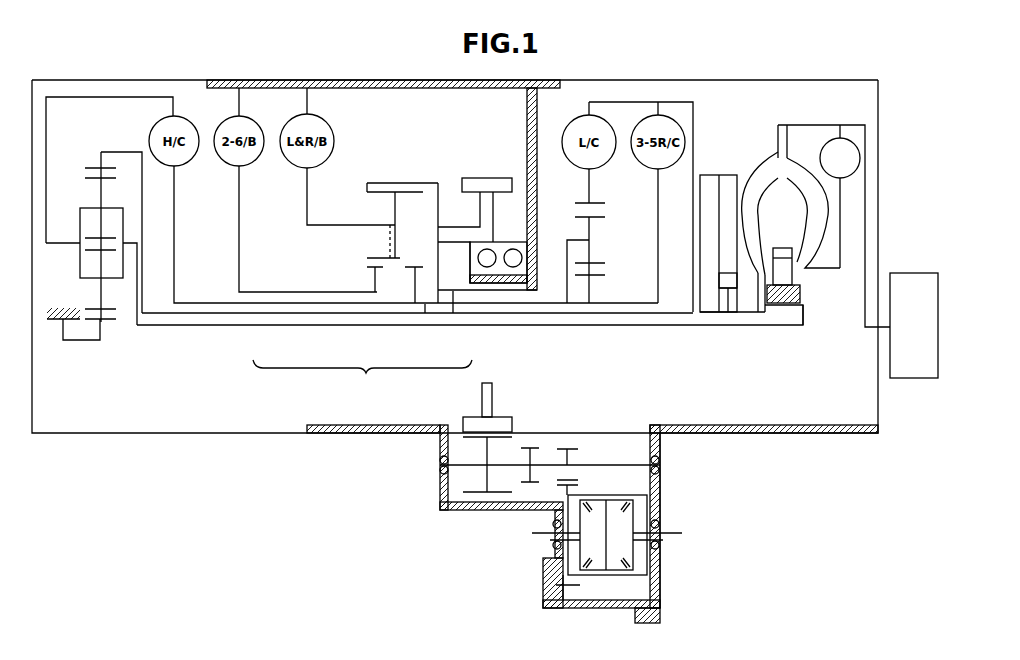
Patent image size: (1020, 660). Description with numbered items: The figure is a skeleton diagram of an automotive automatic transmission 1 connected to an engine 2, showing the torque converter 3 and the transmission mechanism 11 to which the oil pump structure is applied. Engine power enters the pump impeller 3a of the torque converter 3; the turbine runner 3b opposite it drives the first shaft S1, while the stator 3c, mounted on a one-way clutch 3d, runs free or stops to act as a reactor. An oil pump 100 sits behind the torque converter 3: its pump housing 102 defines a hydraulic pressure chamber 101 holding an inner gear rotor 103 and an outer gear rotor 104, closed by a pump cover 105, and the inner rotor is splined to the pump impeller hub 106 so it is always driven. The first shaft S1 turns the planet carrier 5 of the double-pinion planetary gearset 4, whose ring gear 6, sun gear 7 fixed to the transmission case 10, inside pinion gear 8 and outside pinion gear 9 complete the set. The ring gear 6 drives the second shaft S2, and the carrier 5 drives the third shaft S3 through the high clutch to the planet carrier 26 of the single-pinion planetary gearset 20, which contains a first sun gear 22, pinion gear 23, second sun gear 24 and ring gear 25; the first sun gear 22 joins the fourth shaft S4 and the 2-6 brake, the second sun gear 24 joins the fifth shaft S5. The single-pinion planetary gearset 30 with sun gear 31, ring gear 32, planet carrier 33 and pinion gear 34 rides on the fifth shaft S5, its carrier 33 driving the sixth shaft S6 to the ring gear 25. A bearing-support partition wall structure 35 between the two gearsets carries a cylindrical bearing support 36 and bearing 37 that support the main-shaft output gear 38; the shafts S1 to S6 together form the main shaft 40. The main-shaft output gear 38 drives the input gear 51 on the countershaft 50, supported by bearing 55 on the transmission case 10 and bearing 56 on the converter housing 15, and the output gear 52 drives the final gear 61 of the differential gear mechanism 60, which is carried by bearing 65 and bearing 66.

The automatic transmission 1 is at (878, 112).
The engine 2 is at (914, 273).
The torque converter 3 is at (808, 120).
The pump impeller 3a is at (757, 183).
The turbine runner 3b is at (805, 175).
The stator 3c is at (782, 247).
The one-way clutch 3d is at (792, 272).
The double-pinion planetary gearset 4 is at (101, 148).
The planet carrier 5 is at (80, 262).
The ring gear 6 is at (85, 166).
The sun gear 7 is at (107, 325).
The inside pinion gear 8 is at (101, 303).
The outside pinion gear 9 is at (101, 192).
The transmission case 10 is at (470, 90).
The transmission mechanism 11 is at (652, 78).
The converter housing 15 is at (661, 578).
The single-pinion planetary gearset 20 is at (415, 176).
The first sun gear 22 is at (367, 262).
The pinion gear 23 is at (395, 208).
The second sun gear 24 is at (428, 270).
The ring gear 25 is at (395, 182).
The planet carrier 26 is at (307, 232).
The single-pinion planetary gearset 30 is at (600, 202).
The sun gear 31 is at (590, 287).
The ring gear 32 is at (589, 190).
The planet carrier 33 is at (585, 238).
The pinion gear 34 is at (590, 260).
The bearing-support partition wall structure 35 is at (541, 112).
The cylindrical bearing support 36 is at (527, 291).
The bearing 37 is at (487, 262).
The main-shaft output gear 38 is at (492, 178).
The main shaft 40 is at (362, 375).
The countershaft 50 is at (588, 463).
The input gear 51 is at (470, 490).
The output gear 52 is at (565, 445).
The bearing 55 is at (438, 462).
The bearing 56 is at (664, 462).
The differential gear mechanism 60 is at (612, 490).
The final gear 61 is at (565, 600).
The bearing 65 is at (553, 545).
The bearing 66 is at (660, 546).
The oil pump 100 is at (712, 174).
The hydraulic pressure chamber 101 is at (722, 282).
The pump housing 102 is at (752, 300).
The inner gear rotor 103 is at (730, 300).
The outer gear rotor 104 is at (728, 311).
The pump cover 105 is at (708, 313).
The pump impeller hub 106 is at (803, 313).
The first shaft S1 is at (277, 326).
The second shaft S2 is at (300, 314).
The third shaft S3 is at (329, 304).
The fourth shaft S4 is at (357, 293).
The fifth shaft S5 is at (425, 314).
The sixth shaft S6 is at (453, 314).